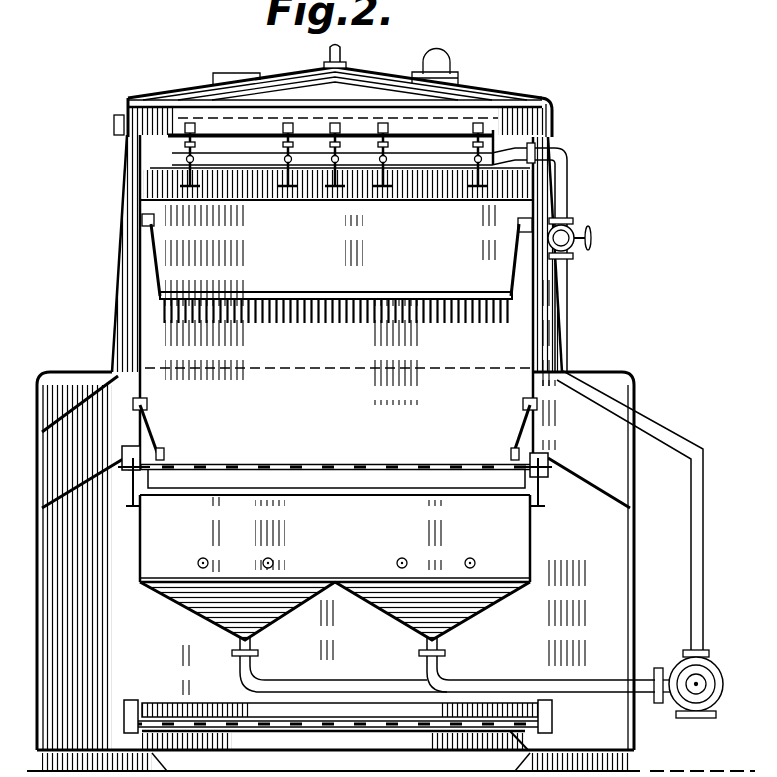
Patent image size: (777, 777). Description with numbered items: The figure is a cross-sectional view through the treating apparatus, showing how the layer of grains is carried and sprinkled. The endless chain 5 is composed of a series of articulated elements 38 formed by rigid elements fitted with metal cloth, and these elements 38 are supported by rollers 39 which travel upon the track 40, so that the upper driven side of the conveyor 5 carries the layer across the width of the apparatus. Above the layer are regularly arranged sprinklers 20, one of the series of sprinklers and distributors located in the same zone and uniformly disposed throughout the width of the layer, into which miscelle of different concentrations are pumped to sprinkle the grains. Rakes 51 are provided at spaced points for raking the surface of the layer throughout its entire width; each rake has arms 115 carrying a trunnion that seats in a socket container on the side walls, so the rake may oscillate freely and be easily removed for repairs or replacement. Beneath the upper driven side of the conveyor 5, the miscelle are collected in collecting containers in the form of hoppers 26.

The sprinkler 20 is at (288, 157).
The arm 115 is at (157, 258).
The rake 51 is at (250, 295).
The endless chain 5 is at (243, 465).
The articulated element 38 is at (380, 465).
The roller 39 is at (127, 471).
The track 40 is at (135, 494).
The hopper 26 is at (217, 610).